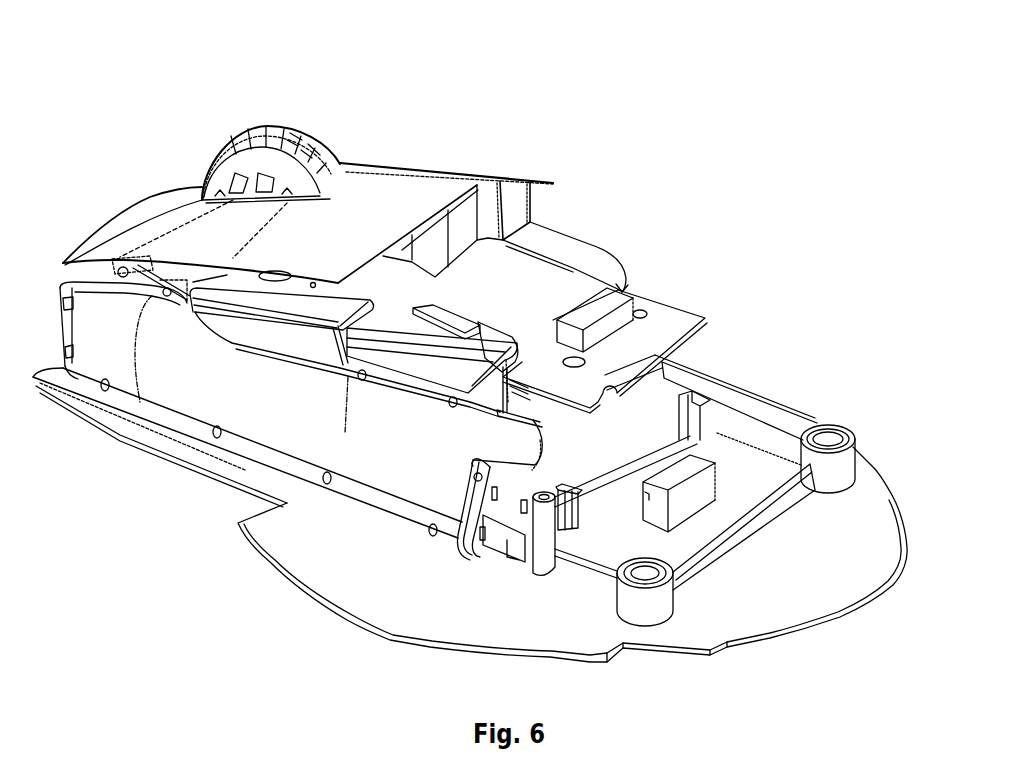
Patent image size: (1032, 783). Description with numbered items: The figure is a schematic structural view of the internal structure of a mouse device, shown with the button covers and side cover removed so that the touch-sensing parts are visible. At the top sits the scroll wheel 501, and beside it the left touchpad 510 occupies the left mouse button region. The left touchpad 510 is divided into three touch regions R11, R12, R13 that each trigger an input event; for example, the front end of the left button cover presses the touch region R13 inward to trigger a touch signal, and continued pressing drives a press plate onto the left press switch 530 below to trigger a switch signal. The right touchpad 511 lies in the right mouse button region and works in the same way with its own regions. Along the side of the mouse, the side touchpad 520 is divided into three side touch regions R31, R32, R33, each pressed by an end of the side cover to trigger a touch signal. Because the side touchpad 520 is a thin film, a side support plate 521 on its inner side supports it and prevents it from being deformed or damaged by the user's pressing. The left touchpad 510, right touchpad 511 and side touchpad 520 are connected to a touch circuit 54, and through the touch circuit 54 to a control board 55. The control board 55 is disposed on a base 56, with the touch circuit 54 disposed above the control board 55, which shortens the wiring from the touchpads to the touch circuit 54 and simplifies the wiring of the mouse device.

The scroll wheel 501 is at (281, 128).
The left touchpad 510 is at (393, 190).
The right touchpad 511 is at (503, 177).
The touch circuit 54 is at (673, 323).
The control board 55 is at (680, 385).
The base 56 is at (863, 497).
The side touchpad 520 is at (178, 305).
The side support plate 521 is at (410, 523).
The left press switch 530 is at (128, 393).
The touch region R11 is at (233, 230).
The touch region R12 is at (327, 242).
The touch region R13 is at (128, 217).
The side touch region R31 is at (282, 353).
The side touch region R32 is at (432, 384).
The side touch region R33 is at (100, 326).